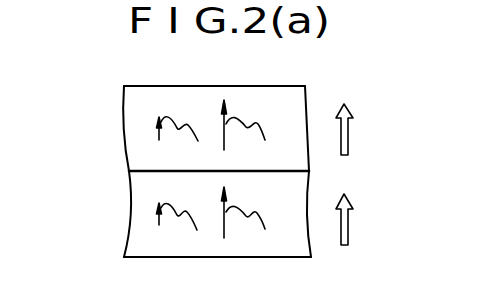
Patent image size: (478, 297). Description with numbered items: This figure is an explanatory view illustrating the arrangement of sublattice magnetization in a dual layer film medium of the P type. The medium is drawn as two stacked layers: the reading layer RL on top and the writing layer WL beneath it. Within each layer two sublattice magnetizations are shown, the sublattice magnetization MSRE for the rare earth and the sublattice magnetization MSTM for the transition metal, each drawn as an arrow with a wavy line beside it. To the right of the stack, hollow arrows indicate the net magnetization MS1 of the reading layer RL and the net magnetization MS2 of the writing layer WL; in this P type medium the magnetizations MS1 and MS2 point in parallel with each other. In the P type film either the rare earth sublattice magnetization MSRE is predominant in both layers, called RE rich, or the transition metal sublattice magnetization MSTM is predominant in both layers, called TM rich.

The reading layer RL is at (132, 133).
The writing layer WL is at (130, 213).
The sublattice magnetization for the rare earth MSRE is at (187, 188).
The sublattice magnetization for the transition metal MSTM is at (259, 179).
The magnetization in the reading layer MS1 is at (371, 133).
The magnetization in the writing layer MS2 is at (373, 222).